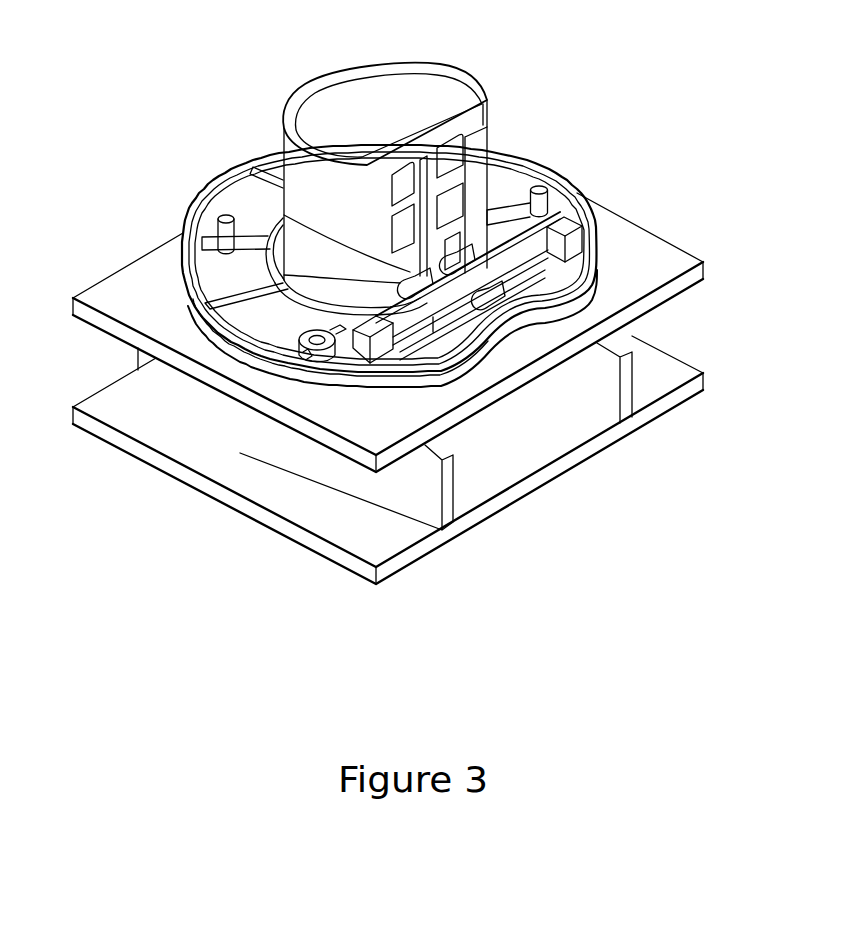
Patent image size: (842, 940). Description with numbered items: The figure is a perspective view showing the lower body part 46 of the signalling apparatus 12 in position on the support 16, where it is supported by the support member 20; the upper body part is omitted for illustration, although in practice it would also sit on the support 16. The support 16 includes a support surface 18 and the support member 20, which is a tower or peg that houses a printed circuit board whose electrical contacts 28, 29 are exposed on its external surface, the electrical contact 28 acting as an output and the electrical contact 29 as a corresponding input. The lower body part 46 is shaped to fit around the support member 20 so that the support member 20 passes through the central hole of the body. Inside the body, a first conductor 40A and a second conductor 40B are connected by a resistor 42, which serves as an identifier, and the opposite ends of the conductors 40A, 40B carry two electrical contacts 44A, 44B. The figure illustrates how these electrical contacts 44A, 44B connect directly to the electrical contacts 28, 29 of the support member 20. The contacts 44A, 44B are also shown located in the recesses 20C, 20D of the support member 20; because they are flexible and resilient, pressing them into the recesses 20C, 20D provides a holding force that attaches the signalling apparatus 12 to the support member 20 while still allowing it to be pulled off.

The signalling apparatus 12 is at (581, 180).
The support 16 is at (594, 471).
The support surface 18 is at (652, 282).
The support member 20 is at (283, 143).
The recess 20C is at (284, 275).
The recess 20D is at (478, 215).
The electrical contact 28 is at (403, 235).
The electrical contact 29 is at (450, 200).
The first conductor 40A is at (430, 300).
The second conductor 40B is at (575, 262).
The resistor 42 is at (505, 298).
The electrical contact 44A is at (284, 215).
The electrical contact 44B is at (490, 215).
The lower body part 46 is at (345, 335).